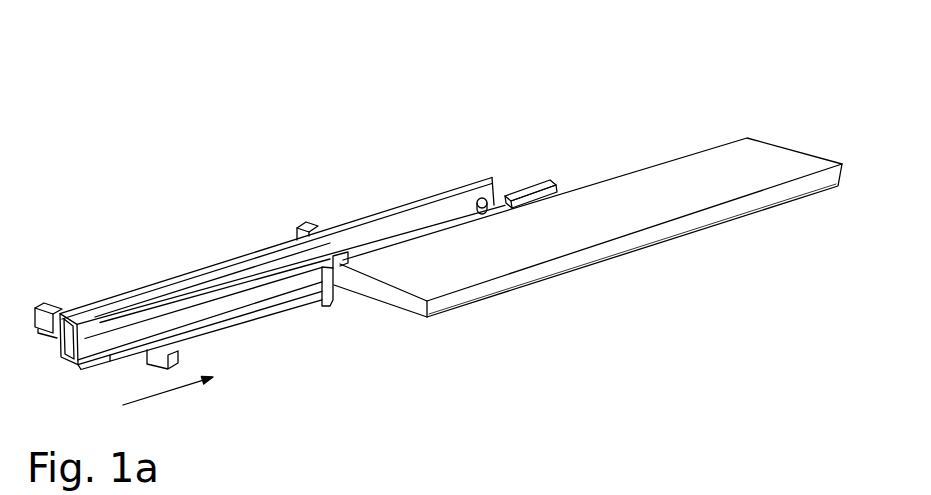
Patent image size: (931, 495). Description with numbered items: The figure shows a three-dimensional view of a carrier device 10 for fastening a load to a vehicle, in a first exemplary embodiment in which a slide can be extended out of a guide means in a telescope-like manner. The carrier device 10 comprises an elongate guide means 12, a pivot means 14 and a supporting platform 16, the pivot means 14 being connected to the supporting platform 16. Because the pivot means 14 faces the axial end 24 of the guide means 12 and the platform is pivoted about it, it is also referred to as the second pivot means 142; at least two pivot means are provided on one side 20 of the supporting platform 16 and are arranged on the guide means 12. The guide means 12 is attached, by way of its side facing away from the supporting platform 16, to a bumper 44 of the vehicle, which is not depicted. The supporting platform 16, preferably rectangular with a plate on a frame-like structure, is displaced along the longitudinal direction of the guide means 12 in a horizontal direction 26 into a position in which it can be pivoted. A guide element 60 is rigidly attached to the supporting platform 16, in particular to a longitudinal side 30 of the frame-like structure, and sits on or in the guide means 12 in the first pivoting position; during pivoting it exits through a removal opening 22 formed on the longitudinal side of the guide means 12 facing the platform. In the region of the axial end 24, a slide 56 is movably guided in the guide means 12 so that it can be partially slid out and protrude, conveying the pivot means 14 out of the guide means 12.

The carrier device 10 is at (206, 125).
The guide means 12 is at (227, 283).
The pivot means 14 is at (559, 308).
The second pivot means 142 is at (478, 200).
The supporting platform 16 is at (703, 200).
The side of the supporting platform 20 is at (645, 157).
The removal opening 22 is at (343, 256).
The axial end 24 is at (498, 190).
The horizontal direction 26 is at (170, 391).
The longitudinal side 30 is at (542, 494).
The bumper 44 is at (147, 290).
The slide 56 is at (537, 187).
The guide element 60 is at (334, 292).